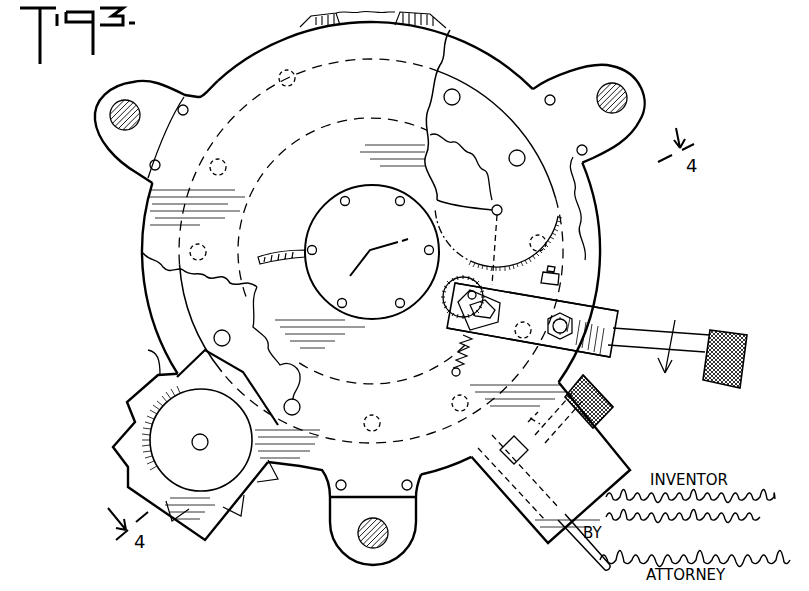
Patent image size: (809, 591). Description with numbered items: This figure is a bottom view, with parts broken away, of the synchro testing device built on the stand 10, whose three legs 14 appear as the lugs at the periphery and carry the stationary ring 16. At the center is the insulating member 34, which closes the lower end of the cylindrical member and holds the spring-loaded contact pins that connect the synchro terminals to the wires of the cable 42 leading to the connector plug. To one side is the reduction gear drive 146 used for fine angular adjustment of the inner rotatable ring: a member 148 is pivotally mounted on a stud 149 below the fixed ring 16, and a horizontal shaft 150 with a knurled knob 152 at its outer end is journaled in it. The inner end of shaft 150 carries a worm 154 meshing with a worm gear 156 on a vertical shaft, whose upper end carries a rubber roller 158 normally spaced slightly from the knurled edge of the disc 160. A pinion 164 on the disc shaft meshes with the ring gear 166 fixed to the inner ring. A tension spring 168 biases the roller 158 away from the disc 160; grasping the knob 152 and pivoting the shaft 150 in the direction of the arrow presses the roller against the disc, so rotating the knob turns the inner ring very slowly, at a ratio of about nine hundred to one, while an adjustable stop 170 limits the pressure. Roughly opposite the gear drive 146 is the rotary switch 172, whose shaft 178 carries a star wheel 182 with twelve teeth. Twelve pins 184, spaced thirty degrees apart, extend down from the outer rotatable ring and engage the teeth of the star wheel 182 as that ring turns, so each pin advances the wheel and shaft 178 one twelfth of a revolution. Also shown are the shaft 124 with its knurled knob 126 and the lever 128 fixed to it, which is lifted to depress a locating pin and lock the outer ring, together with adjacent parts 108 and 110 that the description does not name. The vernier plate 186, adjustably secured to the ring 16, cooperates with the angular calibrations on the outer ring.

The stand 10 is at (553, 72).
The legs 14 is at (110, 115).
The stationary ring 16 is at (489, 58).
The insulating member 34 is at (372, 252).
The cable 42 is at (272, 254).
The knob housing 108 is at (592, 460).
The knob assembly 110 is at (615, 410).
The shaft 124 is at (508, 468).
The knurled knob 126 is at (603, 385).
The lever 128 is at (592, 565).
The reduction gear drive 146 is at (600, 305).
The member 148 is at (598, 323).
The stud 149 is at (570, 317).
The horizontal shaft 150 is at (683, 345).
The knurled knob 152 is at (742, 340).
The worm 154 is at (452, 323).
The worm gear 156 is at (472, 290).
The rubber roller 158 is at (450, 290).
The disc 160 is at (518, 220).
The pinion 164 is at (492, 205).
The ring gear 166 is at (475, 162).
The tension spring 168 is at (458, 344).
The adjustable stop 170 is at (562, 284).
The rotary switch 172 is at (128, 458).
The shaft 178 is at (200, 434).
The star wheel 182 is at (137, 358).
The pins 184 is at (225, 158).
The vernier plate 186 is at (303, 24).